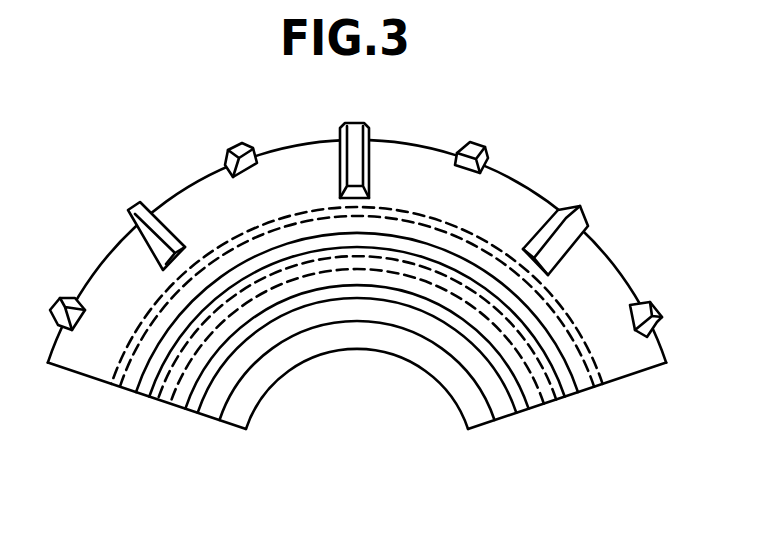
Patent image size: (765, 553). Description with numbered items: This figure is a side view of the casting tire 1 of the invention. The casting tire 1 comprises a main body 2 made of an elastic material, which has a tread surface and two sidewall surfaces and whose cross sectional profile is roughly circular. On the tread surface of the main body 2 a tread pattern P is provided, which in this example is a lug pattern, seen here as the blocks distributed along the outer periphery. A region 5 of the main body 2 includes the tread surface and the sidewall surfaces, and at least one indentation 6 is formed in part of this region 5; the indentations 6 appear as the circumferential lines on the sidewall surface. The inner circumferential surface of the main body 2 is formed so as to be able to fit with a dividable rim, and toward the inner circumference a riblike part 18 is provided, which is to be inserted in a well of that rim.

The casting tire 1 is at (131, 168).
The main body 2 is at (503, 210).
The region 5 is at (580, 300).
The indentation 6 is at (523, 407).
The riblike part 18 is at (483, 413).
The tread pattern P is at (595, 206).